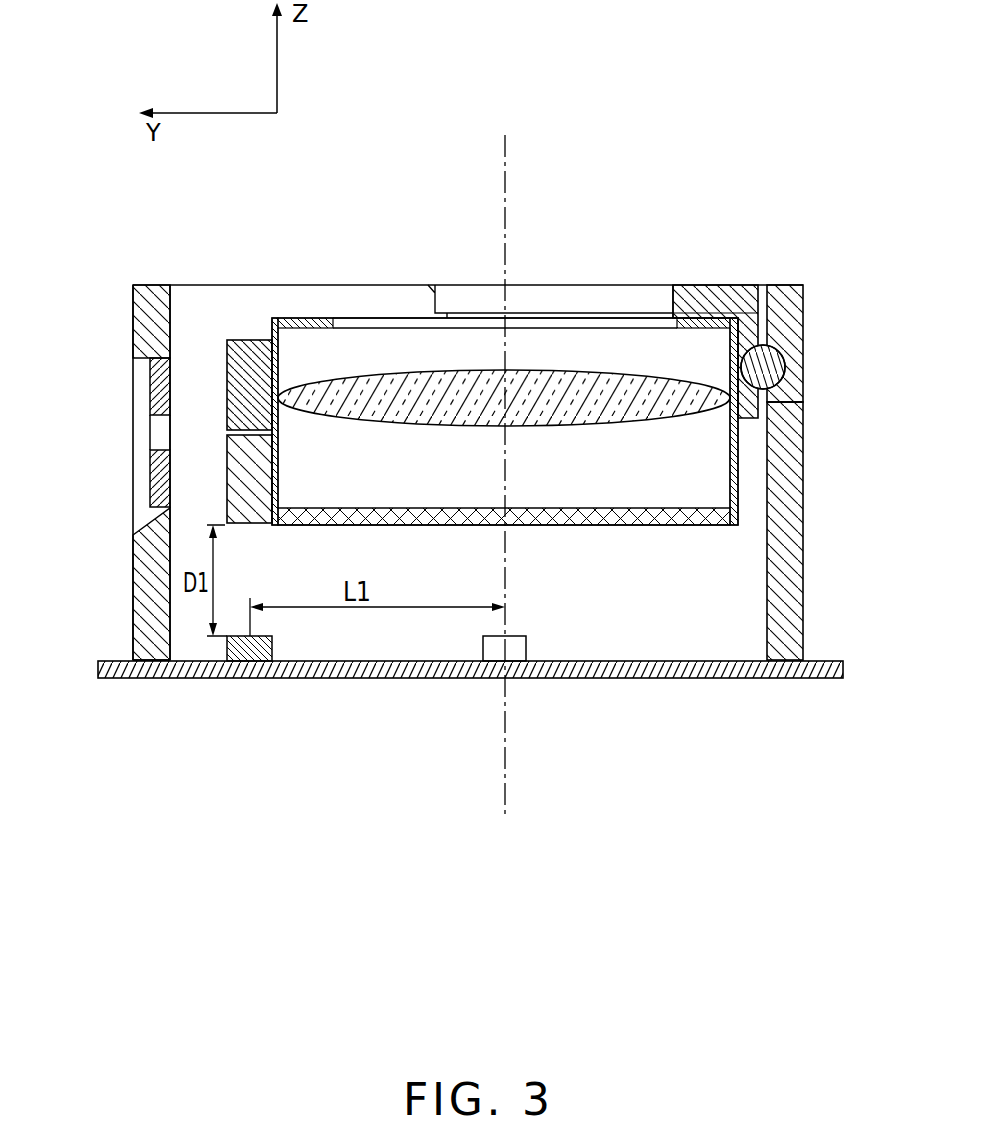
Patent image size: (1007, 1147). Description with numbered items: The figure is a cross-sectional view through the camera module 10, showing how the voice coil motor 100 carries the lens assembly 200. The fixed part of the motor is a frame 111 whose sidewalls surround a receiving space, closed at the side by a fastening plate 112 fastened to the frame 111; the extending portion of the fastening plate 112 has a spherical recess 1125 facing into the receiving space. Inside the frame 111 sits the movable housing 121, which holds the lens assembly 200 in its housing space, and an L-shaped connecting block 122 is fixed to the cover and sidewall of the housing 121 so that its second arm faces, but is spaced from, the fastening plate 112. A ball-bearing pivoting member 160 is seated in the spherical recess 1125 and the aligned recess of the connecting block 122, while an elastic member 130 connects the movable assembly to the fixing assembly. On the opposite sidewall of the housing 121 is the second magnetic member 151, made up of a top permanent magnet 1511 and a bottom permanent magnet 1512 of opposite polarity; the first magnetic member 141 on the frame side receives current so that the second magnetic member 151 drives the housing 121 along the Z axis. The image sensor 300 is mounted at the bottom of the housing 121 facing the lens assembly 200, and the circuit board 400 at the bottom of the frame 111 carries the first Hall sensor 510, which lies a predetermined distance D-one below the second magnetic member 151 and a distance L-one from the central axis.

The camera module 10 is at (575, 190).
The voice coil motor 100 is at (511, 472).
The frame 111 is at (783, 546).
The fastening plate 112 is at (783, 308).
The spherical recess 1125 is at (792, 402).
The housing 121 is at (735, 472).
The connecting block 122 is at (718, 297).
The elastic member 130 is at (698, 293).
The first magnetic member 141 is at (157, 383).
The second magnetic member 151 is at (214, 360).
The top permanent magnet 1511 is at (242, 340).
The bottom permanent magnet 1512 is at (240, 453).
The pivoting member 160 is at (765, 367).
The lens assembly 200 is at (370, 408).
The image sensor 300 is at (632, 520).
The circuit board 400 is at (208, 672).
The first Hall sensor 510 is at (251, 668).